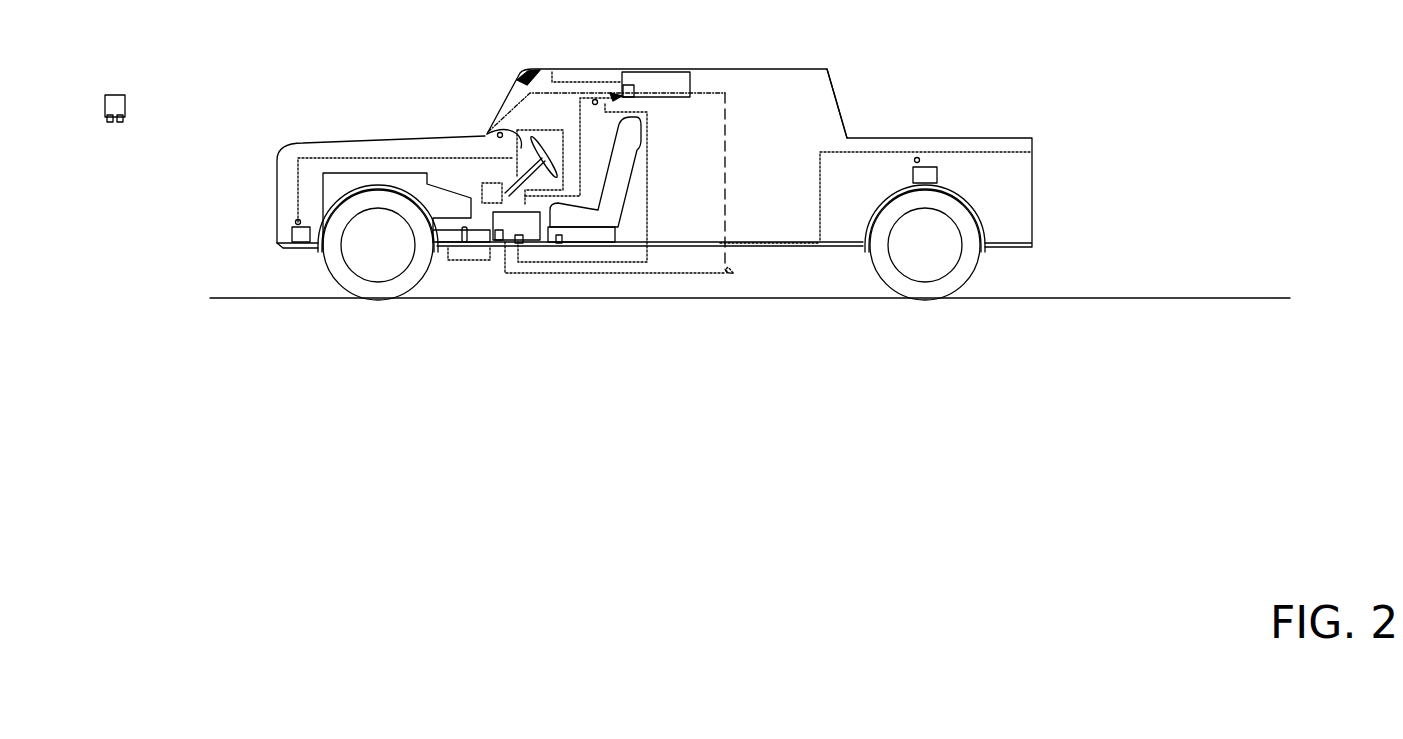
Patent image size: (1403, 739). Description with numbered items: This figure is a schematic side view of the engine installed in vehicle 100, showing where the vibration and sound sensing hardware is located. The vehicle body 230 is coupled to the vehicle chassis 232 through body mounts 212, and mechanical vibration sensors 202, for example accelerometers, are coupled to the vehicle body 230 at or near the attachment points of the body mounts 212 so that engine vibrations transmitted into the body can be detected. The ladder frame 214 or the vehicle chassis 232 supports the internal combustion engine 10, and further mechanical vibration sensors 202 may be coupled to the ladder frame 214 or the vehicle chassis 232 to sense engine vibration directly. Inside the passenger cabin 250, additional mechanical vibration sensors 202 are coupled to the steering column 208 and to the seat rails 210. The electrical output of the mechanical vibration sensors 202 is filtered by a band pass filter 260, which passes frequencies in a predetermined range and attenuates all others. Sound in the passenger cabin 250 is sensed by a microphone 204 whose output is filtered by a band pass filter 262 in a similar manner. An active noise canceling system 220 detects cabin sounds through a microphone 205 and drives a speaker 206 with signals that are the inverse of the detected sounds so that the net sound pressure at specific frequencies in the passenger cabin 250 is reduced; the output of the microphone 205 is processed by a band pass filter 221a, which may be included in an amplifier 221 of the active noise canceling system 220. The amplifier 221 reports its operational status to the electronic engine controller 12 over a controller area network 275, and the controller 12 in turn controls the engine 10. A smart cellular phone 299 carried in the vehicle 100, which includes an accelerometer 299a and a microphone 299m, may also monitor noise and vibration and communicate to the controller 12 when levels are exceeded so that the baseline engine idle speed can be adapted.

The vehicle 100 is at (378, 90).
The active noise canceling system 220 is at (608, 45).
The speaker 206 is at (521, 76).
The steering column 208 is at (496, 129).
The microphone 205 is at (499, 138).
The microphone 204 is at (594, 104).
The amplifier 221 is at (656, 85).
The band pass filter 221a is at (632, 103).
The mechanical vibration sensors 202 is at (298, 220).
The body mounts 212 is at (291, 238).
The vehicle chassis 232 is at (313, 247).
The internal combustion engine 10 is at (406, 211).
The electronic engine controller 12 is at (516, 221).
The band pass filter 260 is at (494, 242).
The band pass filter 262 is at (522, 243).
The ladder frame 214 is at (463, 241).
The seat rails 210 is at (618, 232).
The passenger cabin 250 is at (752, 136).
The vehicle body 230 is at (862, 108).
The controller area network 275 is at (727, 190).
The smart cellular phone 299 is at (116, 95).
The accelerometer 299a is at (108, 120).
The microphone 299m is at (122, 122).